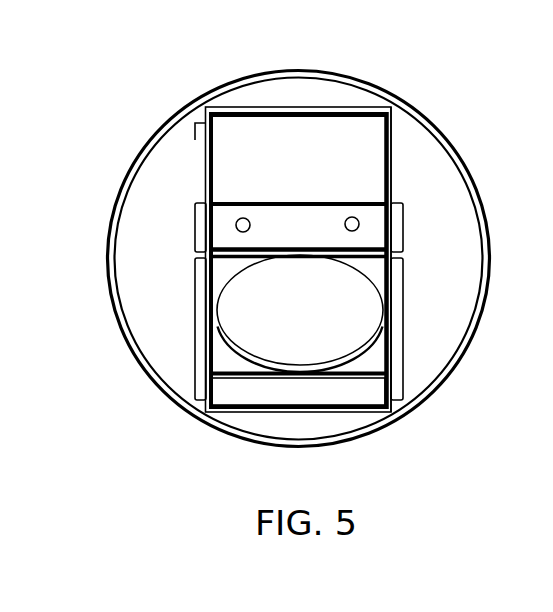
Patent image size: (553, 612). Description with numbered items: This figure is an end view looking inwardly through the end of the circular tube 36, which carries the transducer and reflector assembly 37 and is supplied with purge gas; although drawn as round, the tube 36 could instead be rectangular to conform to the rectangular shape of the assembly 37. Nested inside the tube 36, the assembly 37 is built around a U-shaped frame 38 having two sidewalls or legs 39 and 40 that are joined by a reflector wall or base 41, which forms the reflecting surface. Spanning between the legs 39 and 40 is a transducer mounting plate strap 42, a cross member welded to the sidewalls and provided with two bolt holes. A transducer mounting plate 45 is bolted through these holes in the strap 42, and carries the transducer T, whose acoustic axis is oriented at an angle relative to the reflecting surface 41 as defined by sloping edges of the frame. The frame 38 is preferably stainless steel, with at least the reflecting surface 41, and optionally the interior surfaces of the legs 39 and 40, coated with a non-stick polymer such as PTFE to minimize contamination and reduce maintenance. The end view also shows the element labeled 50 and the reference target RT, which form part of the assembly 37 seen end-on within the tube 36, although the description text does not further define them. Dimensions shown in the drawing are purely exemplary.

The circular tube 36 is at (372, 82).
The transducer and reflector assembly 37 is at (388, 135).
The U-shaped frame 38 is at (425, 175).
The sidewall or leg 39 is at (393, 189).
The sidewall or leg 40 is at (205, 173).
The reflector wall or base 41 is at (305, 112).
The transducer mounting plate strap 42 is at (360, 226).
The transducer mounting plate 45 is at (365, 362).
The side guides 50 is at (405, 298).
The retainer RT is at (230, 120).
The transducer T is at (245, 313).